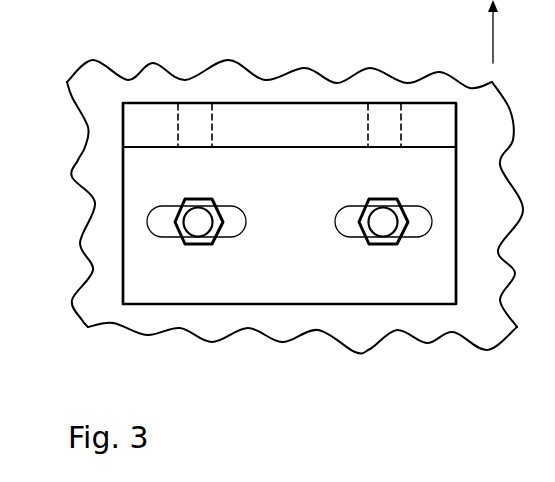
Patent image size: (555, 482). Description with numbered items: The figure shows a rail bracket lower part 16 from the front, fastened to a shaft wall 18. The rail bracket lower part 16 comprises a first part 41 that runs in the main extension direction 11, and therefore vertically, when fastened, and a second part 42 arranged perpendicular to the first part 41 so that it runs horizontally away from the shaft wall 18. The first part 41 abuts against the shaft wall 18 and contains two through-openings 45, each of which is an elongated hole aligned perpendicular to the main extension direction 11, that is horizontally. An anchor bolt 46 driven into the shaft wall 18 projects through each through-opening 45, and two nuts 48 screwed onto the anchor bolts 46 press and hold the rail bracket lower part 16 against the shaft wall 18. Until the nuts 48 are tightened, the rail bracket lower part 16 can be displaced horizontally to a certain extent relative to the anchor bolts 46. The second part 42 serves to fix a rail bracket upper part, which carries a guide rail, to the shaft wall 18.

The main extension direction 11 is at (493, 33).
The rail bracket lower part 16 is at (108, 153).
The shaft wall 18 is at (95, 88).
The first part 41 is at (138, 175).
The second part 42 is at (263, 123).
The through-openings 45 is at (165, 235).
The anchor bolt 46 is at (194, 222).
The nuts 48 is at (190, 245).